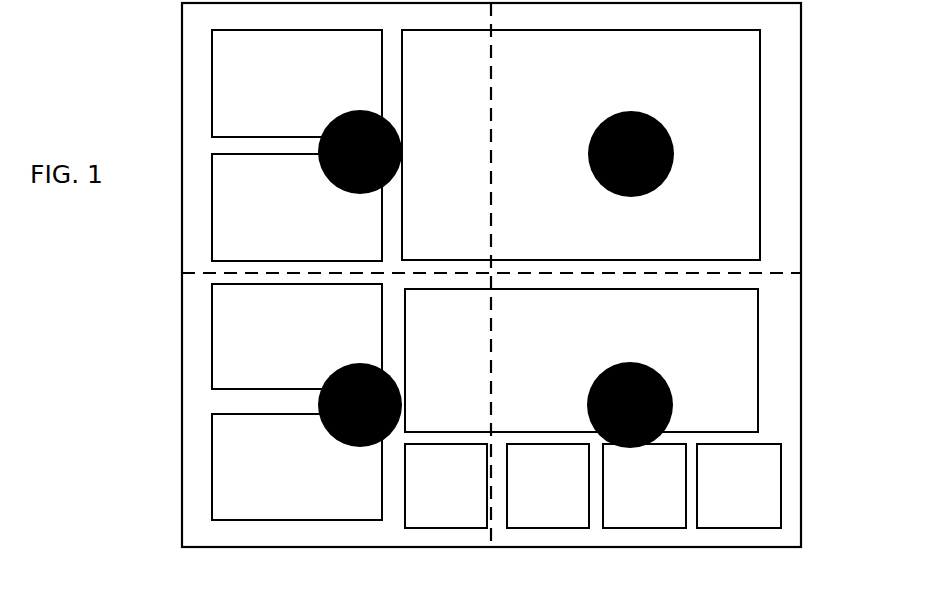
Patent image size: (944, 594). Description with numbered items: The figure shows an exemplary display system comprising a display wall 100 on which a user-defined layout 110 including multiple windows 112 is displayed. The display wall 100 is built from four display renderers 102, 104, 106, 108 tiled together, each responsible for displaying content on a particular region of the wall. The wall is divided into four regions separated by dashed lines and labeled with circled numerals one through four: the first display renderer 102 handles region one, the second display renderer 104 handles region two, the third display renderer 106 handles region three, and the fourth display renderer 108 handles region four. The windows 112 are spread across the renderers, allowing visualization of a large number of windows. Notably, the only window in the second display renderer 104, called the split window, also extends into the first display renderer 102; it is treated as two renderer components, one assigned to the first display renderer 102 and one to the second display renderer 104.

The display wall 100 is at (147, 67).
The first display renderer 102 is at (196, 87).
The second display renderer 104 is at (779, 70).
The third display renderer 106 is at (202, 397).
The fourth display renderer 108 is at (775, 377).
The user-defined layout 110 is at (197, 258).
The windows 112 is at (302, 30).